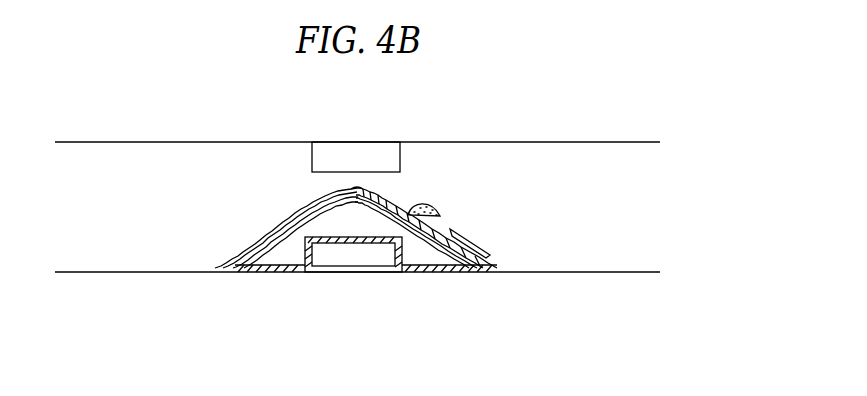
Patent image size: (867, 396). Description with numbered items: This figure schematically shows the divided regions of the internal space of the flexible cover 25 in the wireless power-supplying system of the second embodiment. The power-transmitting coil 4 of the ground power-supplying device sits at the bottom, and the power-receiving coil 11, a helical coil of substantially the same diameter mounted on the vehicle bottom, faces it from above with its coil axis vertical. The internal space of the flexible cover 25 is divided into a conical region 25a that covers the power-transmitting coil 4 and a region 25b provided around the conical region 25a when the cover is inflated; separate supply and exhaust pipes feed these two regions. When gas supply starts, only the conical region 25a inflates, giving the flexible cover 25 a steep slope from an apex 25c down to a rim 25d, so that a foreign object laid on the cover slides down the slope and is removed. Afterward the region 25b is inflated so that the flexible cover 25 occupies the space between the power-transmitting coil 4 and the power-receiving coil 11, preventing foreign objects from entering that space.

The power-receiving coil 11 is at (317, 178).
The power-transmitting coil 4 is at (330, 262).
The flexible cover 25 is at (364, 246).
The conical region 25a is at (290, 275).
The region 25b is at (267, 238).
The apex 25c is at (360, 187).
The rim 25d is at (492, 268).